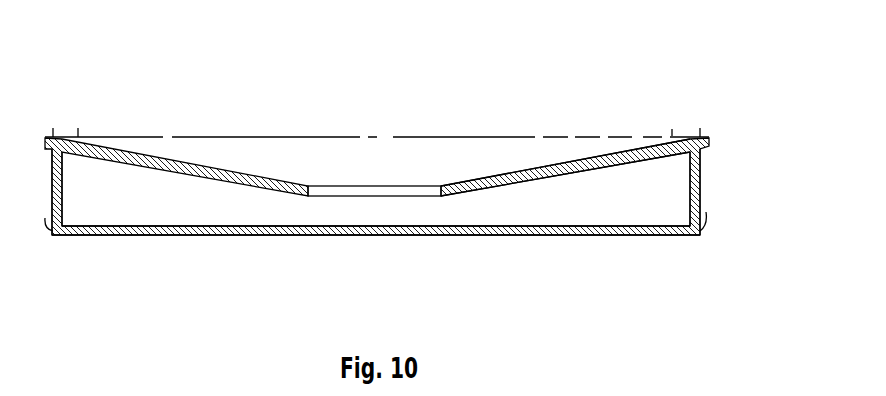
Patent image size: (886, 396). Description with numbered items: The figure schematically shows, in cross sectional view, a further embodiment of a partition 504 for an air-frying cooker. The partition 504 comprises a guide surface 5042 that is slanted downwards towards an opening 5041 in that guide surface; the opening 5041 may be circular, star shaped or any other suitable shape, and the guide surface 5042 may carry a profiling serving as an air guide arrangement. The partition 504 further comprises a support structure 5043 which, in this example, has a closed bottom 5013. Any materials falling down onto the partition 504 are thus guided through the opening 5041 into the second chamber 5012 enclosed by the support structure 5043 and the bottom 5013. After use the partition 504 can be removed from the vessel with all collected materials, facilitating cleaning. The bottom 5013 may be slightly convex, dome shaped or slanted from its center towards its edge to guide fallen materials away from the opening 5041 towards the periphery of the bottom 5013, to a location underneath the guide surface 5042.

The partition 504 is at (137, 120).
The opening 5041 is at (384, 189).
The guide surface 5042 is at (553, 172).
The support structure 5043 is at (698, 193).
The second chamber 5012 is at (145, 190).
The bottom 5013 is at (575, 235).